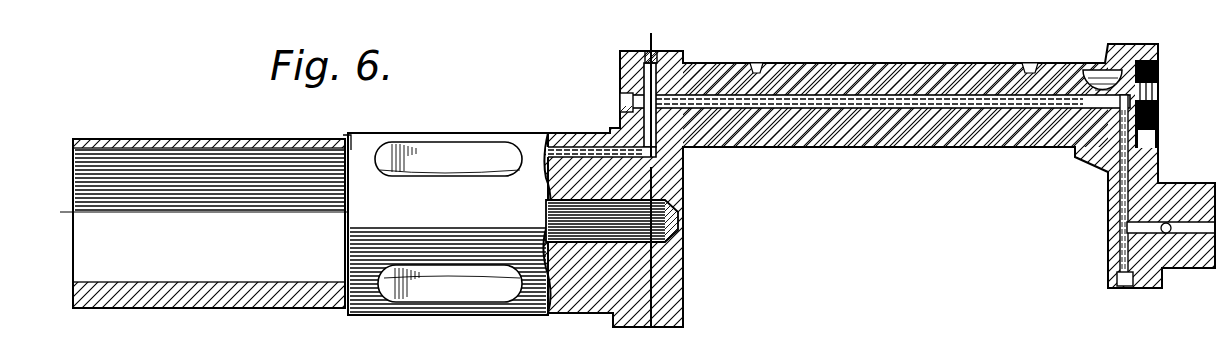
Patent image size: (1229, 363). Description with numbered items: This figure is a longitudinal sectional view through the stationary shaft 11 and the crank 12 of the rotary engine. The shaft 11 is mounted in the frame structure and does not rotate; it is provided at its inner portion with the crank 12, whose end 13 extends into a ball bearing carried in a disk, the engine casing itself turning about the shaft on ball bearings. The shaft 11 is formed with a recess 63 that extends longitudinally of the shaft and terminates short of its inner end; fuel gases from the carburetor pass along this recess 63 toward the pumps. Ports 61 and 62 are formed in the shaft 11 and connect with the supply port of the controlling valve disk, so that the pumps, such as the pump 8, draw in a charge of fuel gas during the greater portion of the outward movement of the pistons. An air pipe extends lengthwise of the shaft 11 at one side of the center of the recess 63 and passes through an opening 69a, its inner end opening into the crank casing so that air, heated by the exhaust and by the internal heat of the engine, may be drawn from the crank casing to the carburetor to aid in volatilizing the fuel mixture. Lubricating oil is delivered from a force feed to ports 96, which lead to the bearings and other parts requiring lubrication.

The pump 8 is at (651, 352).
The shaft 11 is at (879, 203).
The crank 12 is at (955, 147).
The end of the crank 13 is at (1140, 163).
The port 61 is at (450, 272).
The port 62 is at (465, 128).
The recess 63 is at (205, 221).
The opening 69a is at (656, 230).
The ports 96 is at (570, 140).